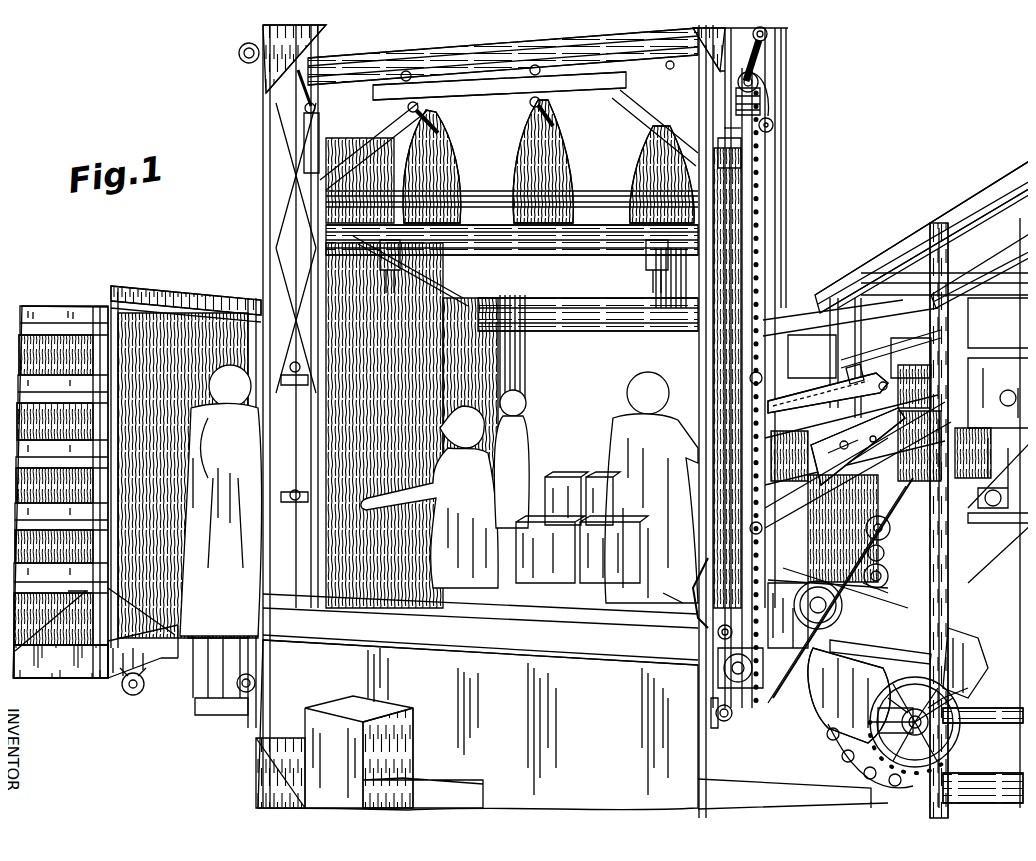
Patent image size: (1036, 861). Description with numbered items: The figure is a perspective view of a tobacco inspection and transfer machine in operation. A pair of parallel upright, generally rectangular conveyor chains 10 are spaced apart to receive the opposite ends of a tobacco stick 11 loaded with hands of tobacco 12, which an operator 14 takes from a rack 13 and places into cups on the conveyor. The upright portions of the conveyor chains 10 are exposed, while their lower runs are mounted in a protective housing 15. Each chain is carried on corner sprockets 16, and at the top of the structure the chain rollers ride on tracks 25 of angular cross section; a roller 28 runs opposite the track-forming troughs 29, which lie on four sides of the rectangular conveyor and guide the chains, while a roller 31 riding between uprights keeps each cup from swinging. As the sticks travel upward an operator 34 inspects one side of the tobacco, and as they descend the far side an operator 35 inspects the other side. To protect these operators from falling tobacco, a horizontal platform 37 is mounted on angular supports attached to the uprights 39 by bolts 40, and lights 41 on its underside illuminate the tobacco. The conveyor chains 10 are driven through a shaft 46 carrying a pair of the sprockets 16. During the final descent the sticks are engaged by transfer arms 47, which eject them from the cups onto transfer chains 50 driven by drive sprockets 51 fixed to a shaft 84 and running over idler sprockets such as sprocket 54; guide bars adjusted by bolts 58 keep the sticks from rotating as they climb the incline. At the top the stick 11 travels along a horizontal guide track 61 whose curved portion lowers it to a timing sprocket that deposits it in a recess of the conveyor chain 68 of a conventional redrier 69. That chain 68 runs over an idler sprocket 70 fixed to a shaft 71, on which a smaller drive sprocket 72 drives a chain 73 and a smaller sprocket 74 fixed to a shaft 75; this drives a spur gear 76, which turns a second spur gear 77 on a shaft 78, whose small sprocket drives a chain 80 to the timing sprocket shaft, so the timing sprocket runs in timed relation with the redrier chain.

The conveyor chains 10 is at (608, 200).
The tobacco stick 11 is at (428, 112).
The hands of tobacco 12 is at (130, 305).
The rack 13 is at (55, 298).
The operator 14 is at (221, 540).
The protective housing 15 is at (448, 618).
The corner sprockets 16 is at (312, 112).
The tracks 25 is at (595, 85).
The roller 28 is at (290, 100).
The troughs 29 is at (455, 70).
The roller 31 is at (312, 125).
The operator 34 is at (427, 425).
The operator 35 is at (605, 445).
The horizontal platform 37 is at (605, 312).
The uprights 39 is at (505, 358).
The bolts 40 is at (350, 232).
The lights 41 is at (432, 275).
The shaft 46 is at (725, 712).
The transfer arms 47 is at (742, 482).
The transfer chains 50 is at (835, 412).
The drive sprockets 51 is at (685, 600).
The idler sprocket 54 is at (748, 660).
The bolts 58 is at (850, 365).
The guide track 61 is at (890, 378).
The conveyor chain 68 is at (820, 720).
The redrier 69 is at (990, 192).
The idler sprocket 70 is at (780, 598).
The shaft 71 is at (920, 718).
The drive sprocket 72 is at (828, 634).
The chain 73 is at (845, 588).
The sprocket 74 is at (882, 574).
The shaft 75 is at (878, 582).
The spur gear 76 is at (880, 555).
The second spur gear 77 is at (884, 513).
The shaft 78 is at (880, 530).
The chain 80 is at (892, 500).
The shaft 84 is at (710, 624).